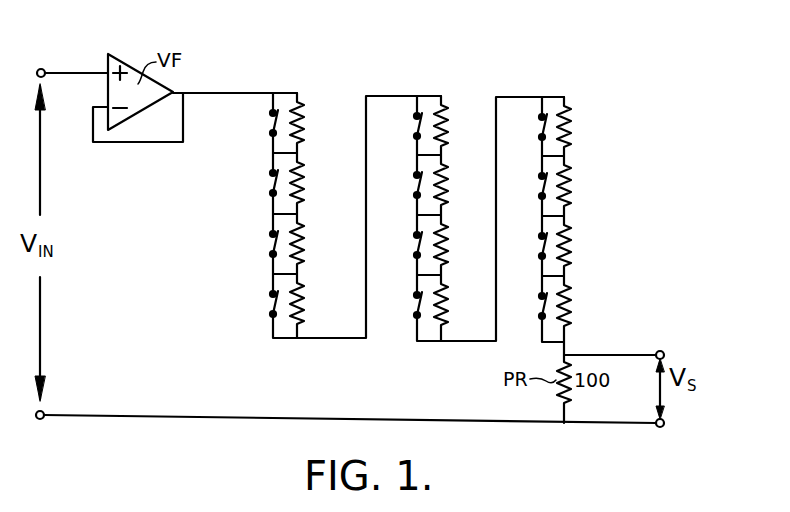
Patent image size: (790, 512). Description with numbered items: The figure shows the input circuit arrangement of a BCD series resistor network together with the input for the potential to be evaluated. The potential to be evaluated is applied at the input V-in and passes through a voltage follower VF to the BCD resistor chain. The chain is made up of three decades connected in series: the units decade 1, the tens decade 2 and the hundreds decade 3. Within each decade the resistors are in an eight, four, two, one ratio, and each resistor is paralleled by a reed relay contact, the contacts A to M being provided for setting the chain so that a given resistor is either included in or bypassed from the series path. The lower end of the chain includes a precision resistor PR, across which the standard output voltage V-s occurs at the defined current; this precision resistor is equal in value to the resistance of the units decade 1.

The units decade 1 is at (562, 94).
The tens decade 2 is at (422, 94).
The hundreds decade 3 is at (287, 91).